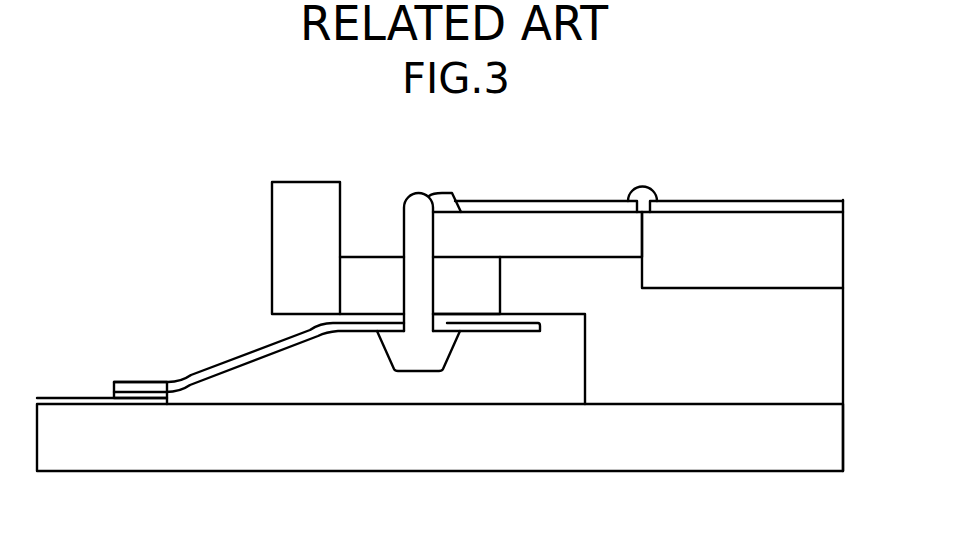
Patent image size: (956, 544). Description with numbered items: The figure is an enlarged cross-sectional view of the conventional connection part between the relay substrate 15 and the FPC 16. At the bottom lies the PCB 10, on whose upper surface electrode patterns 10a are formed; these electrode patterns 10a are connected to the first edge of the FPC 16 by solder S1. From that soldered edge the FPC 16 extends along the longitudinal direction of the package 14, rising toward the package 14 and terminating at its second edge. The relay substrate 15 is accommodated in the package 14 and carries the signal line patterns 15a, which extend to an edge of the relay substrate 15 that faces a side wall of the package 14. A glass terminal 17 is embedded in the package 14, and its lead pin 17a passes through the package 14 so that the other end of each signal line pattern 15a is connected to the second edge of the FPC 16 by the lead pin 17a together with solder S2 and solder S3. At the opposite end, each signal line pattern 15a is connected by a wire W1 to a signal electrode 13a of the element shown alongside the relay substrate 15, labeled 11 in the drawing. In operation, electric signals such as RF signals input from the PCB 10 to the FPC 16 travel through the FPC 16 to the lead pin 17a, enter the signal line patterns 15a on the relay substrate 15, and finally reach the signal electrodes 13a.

The PCB 10 is at (104, 457).
The electrode pattern 10a is at (75, 400).
The semiconductor chip 11 is at (793, 230).
The signal electrode 13a is at (743, 205).
The package 14 is at (292, 214).
The relay substrate 15 is at (487, 218).
The signal line pattern 15a is at (573, 207).
The FPC 16 is at (247, 353).
The glass terminal 17 is at (357, 288).
The lead pin 17a is at (415, 203).
The solder S1 is at (143, 397).
The solder S2 is at (406, 371).
The solder S3 is at (439, 193).
The wire W1 is at (642, 186).